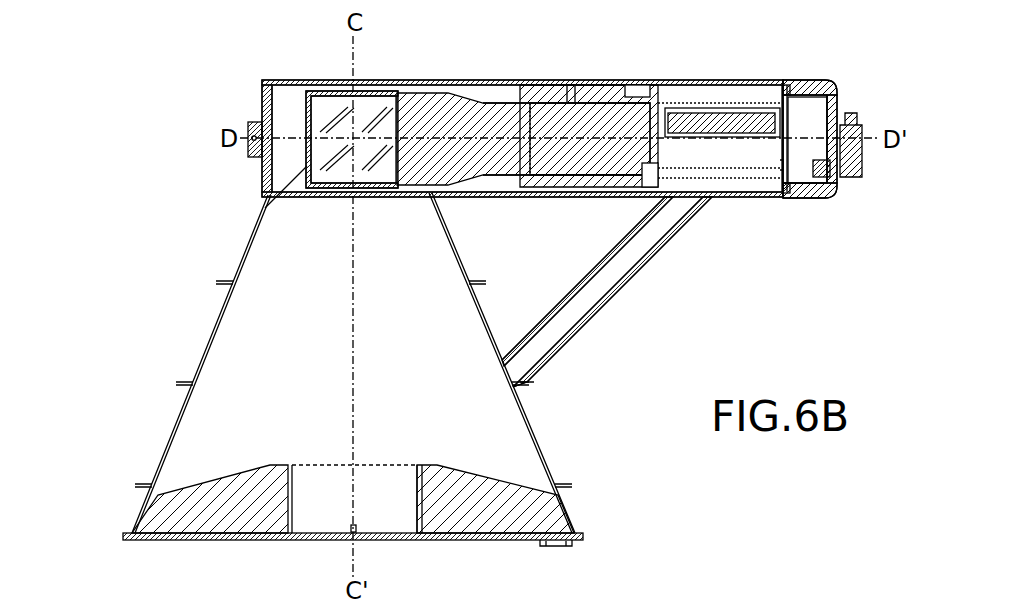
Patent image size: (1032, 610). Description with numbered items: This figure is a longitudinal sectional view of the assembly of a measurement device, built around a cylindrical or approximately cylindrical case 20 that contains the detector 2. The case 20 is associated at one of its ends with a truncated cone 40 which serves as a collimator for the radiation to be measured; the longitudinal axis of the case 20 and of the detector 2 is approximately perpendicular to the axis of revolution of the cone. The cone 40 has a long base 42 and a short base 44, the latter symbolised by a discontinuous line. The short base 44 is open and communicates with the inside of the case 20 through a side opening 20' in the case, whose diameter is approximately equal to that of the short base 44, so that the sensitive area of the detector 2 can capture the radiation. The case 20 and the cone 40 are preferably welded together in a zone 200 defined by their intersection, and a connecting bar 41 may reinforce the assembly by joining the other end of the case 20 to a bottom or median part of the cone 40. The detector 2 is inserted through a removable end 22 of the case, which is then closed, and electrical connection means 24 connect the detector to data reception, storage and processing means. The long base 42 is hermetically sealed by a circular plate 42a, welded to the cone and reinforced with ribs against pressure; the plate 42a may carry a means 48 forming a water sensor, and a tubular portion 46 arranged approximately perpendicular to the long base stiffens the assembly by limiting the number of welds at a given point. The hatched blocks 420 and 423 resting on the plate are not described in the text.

The detector 2 is at (450, 86).
The case 20 is at (589, 98).
The side opening 20' is at (517, 159).
The removable end 22 is at (826, 80).
The electrical connection means 24 is at (858, 178).
The welding zone 200 is at (292, 180).
The short base 44 is at (305, 203).
The truncated cone 40 is at (458, 231).
The connecting bar 41 is at (648, 255).
The long base 42 is at (336, 500).
The plate 42a is at (175, 542).
The left weight block 420 is at (225, 493).
The right weight block 423 is at (482, 490).
The tubular portion 46 is at (418, 484).
The water sensor means 48 is at (556, 546).